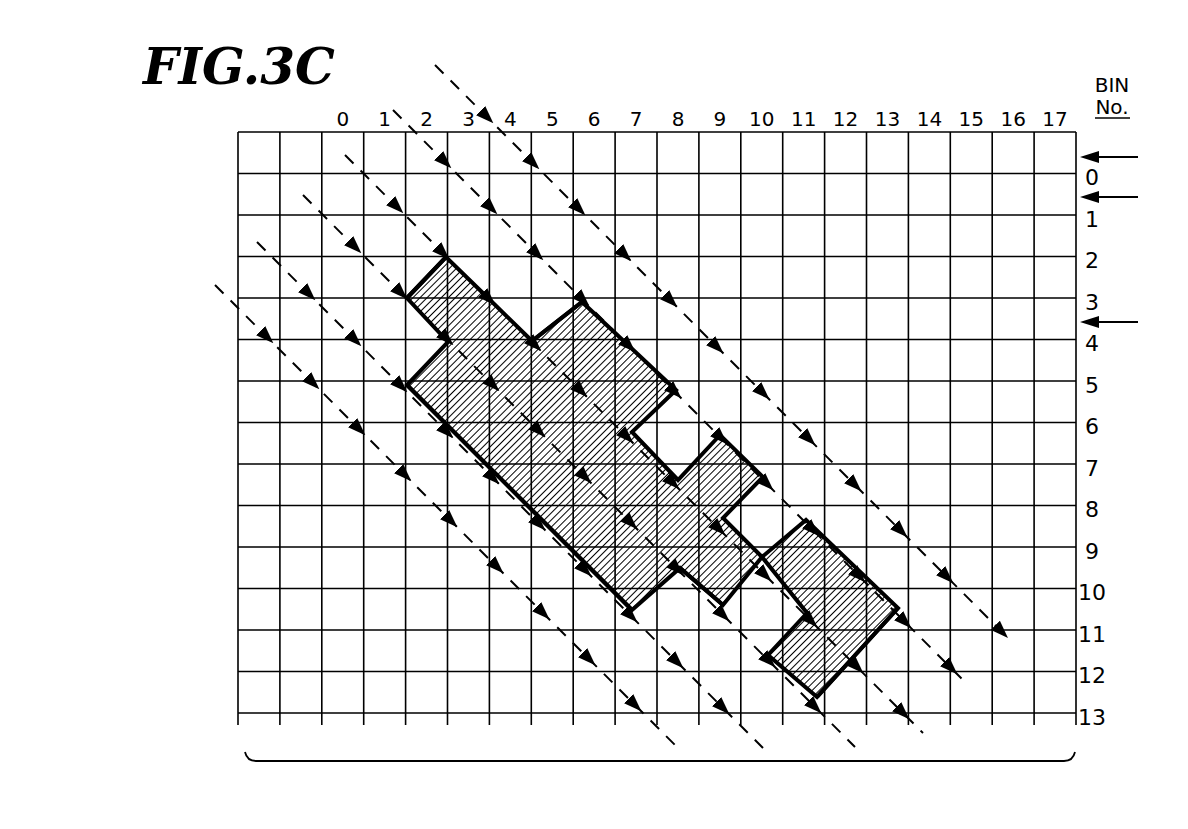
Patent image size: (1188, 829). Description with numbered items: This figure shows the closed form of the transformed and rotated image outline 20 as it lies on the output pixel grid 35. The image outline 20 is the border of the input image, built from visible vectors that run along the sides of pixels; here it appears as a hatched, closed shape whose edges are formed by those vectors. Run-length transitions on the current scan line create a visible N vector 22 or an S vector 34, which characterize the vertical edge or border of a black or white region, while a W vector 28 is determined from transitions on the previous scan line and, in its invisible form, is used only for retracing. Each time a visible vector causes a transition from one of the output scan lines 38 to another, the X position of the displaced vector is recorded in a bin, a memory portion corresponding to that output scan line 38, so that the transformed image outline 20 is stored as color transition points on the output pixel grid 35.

The image outline 20 is at (605, 320).
The visible N vector 22 is at (419, 285).
The W vector 28 is at (469, 455).
The S vector 34 is at (873, 634).
The output pixel grid 35 is at (660, 772).
The output scan lines 38 is at (1122, 157).